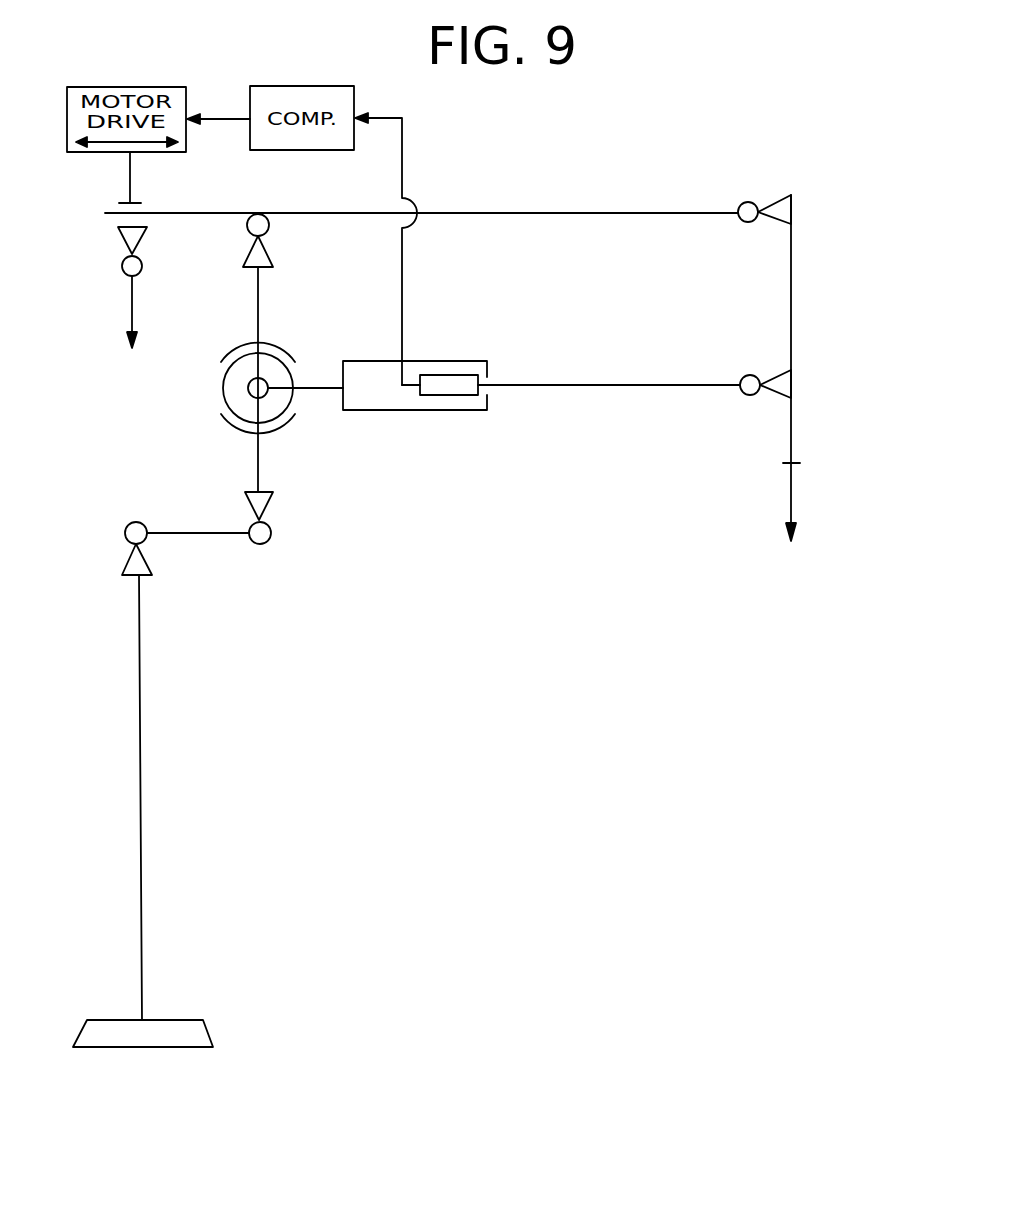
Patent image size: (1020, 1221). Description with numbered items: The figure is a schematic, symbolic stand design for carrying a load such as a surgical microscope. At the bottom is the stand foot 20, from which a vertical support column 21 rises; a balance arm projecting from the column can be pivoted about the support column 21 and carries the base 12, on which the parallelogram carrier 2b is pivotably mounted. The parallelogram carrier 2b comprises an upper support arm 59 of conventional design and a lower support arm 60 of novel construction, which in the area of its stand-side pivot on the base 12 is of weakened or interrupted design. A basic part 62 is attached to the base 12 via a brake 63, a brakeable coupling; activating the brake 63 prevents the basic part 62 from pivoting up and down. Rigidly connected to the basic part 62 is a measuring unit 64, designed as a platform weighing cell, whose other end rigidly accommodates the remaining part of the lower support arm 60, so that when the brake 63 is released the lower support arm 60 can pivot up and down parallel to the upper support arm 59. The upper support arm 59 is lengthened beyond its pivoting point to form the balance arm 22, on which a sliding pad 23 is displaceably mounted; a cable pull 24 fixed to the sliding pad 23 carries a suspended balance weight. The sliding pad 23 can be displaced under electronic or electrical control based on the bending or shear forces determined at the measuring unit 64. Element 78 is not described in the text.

The base 12 is at (260, 482).
The stand foot 20 is at (190, 1018).
The vertical support column 21 is at (141, 786).
The balance arm 22 is at (193, 535).
The sliding pad 23 is at (135, 200).
The cable pull 24 is at (133, 284).
The upper support arm 59 is at (514, 257).
The lower support arm 60 is at (541, 429).
The basic part 62 is at (370, 410).
The brake 63 is at (233, 428).
The measuring unit 64 is at (448, 390).
The mirror 78 is at (792, 352).
The parallelogram carrier 2b is at (673, 298).